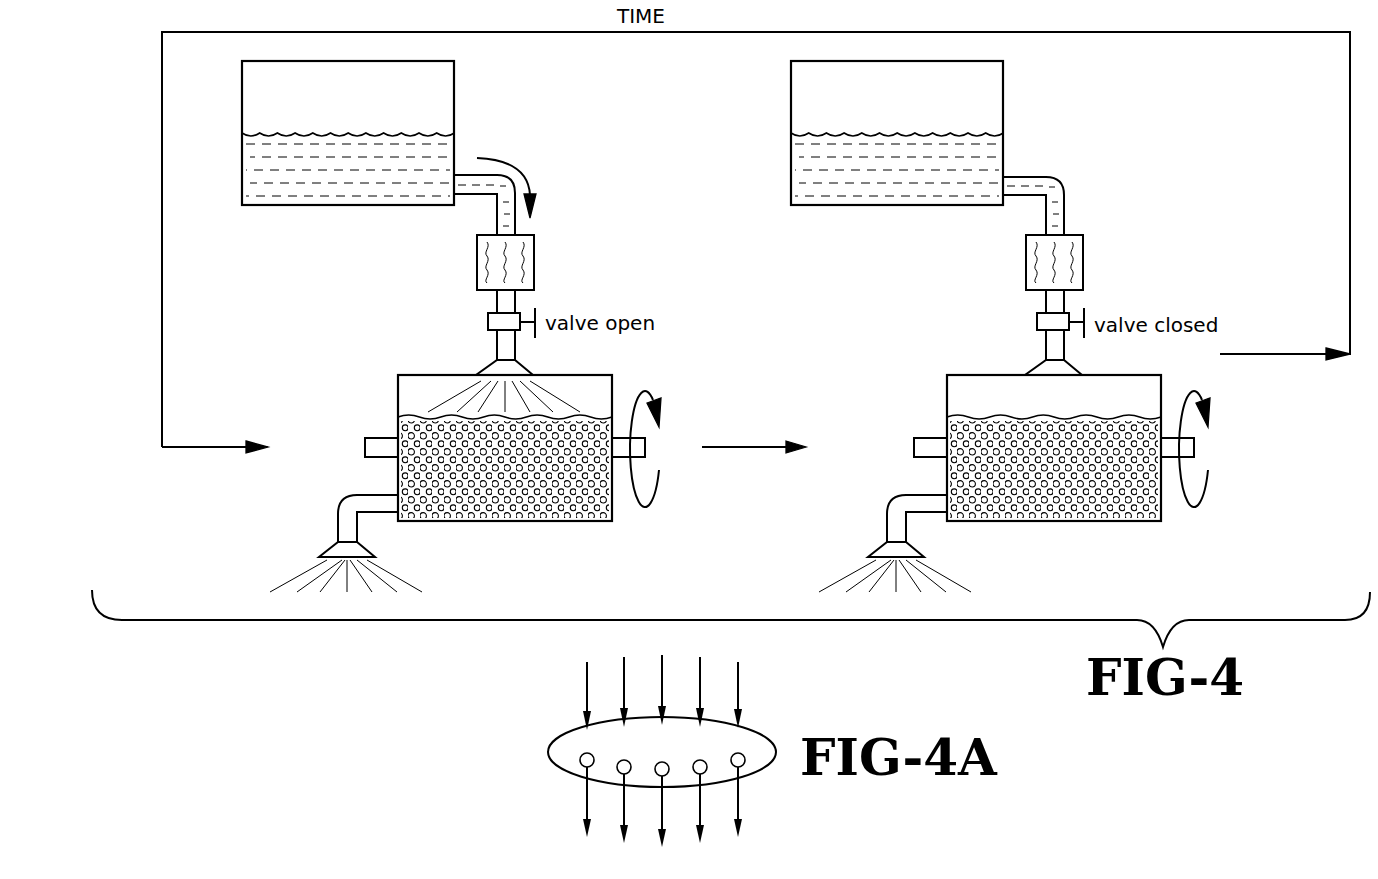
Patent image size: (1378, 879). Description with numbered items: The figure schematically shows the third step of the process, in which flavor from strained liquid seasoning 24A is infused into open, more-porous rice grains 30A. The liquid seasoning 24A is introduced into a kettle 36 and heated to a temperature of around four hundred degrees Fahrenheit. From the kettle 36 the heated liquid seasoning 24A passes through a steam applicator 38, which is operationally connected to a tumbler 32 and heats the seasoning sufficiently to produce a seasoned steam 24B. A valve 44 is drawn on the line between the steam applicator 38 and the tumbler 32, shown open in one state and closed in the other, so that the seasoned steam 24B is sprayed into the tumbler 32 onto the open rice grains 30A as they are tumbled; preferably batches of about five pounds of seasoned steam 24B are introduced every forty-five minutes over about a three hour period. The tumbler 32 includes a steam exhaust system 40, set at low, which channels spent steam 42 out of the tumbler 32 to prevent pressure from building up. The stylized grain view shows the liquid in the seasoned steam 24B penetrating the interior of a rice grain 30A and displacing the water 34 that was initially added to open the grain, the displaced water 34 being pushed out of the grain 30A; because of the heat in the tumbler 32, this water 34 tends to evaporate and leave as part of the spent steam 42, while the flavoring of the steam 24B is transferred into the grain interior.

In FIG. 4, the strained liquid seasoning 24A is at (344, 154).
In FIG. 4, the seasoned steam 24B is at (532, 252).
In FIG. 4A, the seasoned steam 24B is at (623, 688).
In FIG. 4, the kettle 36 is at (454, 93).
In FIG. 4, the steam applicator 38 is at (477, 257).
In FIG. 4, the valve 44 is at (488, 323).
In FIG. 4, the tumbler 32 is at (398, 392).
In FIG. 4, the open rice grains 30A is at (495, 502).
In FIG. 4A, the open rice grains 30A is at (548, 738).
In FIG. 4, the steam exhaust system 40 is at (360, 493).
In FIG. 4, the spent steam 42 is at (298, 577).
In FIG. 4A, the water 34 is at (587, 797).